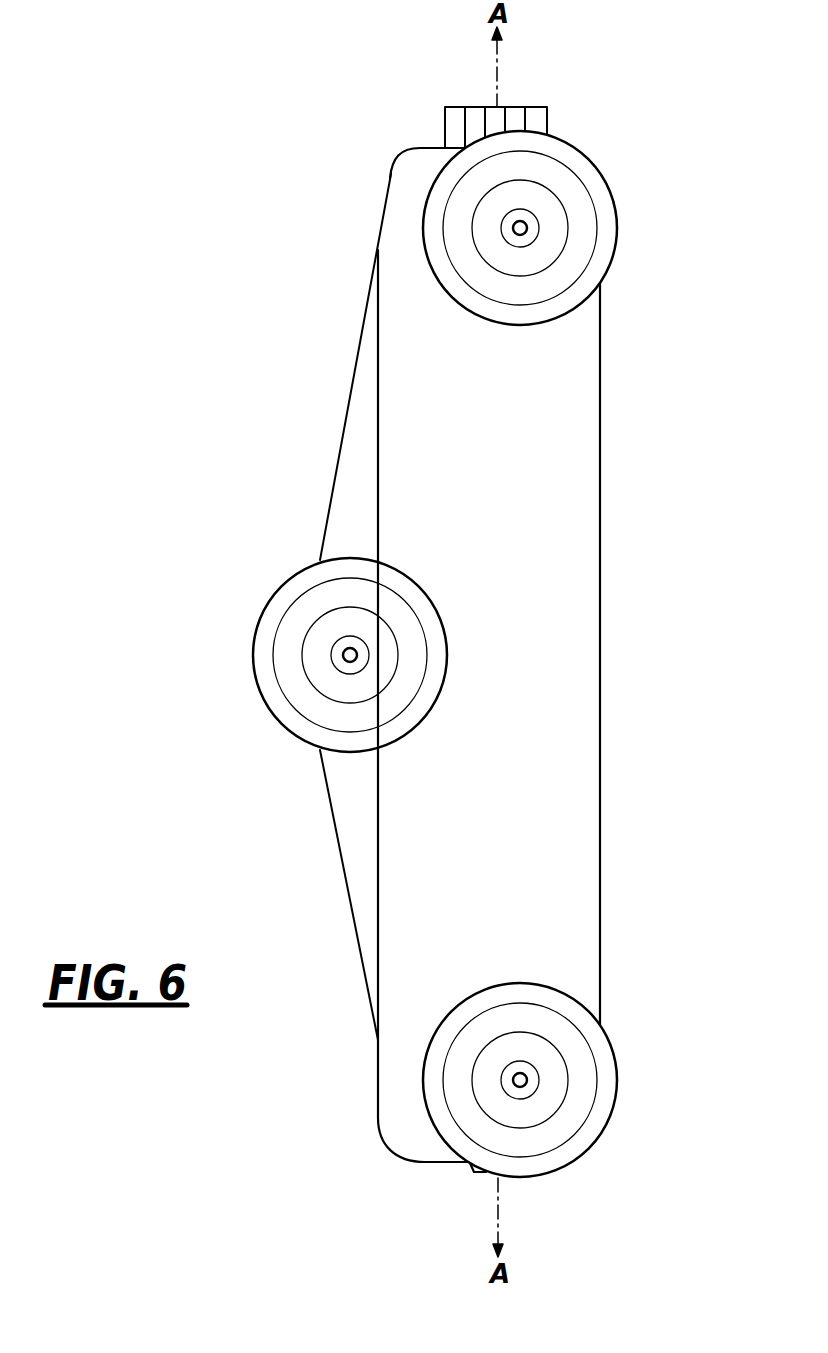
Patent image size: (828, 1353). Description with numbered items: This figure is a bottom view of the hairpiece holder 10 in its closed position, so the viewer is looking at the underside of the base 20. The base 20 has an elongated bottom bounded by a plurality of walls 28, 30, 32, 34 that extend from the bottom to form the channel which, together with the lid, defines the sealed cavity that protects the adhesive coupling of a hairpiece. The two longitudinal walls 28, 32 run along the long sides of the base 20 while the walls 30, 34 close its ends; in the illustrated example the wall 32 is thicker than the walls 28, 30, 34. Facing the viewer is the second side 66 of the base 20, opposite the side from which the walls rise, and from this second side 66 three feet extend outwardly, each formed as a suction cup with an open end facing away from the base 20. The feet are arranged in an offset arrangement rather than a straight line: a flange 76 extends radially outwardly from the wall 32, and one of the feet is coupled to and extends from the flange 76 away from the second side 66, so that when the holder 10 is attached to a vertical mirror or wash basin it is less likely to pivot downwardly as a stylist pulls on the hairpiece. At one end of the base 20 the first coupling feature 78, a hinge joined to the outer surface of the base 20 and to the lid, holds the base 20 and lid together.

The hairpiece holder 10 is at (176, 305).
The base 20 is at (608, 496).
The wall 28 is at (600, 409).
The wall 30 is at (435, 148).
The wall 32 is at (375, 425).
The wall 34 is at (437, 1163).
The second side 66 is at (562, 638).
The flange 76 is at (333, 500).
The first coupling feature 78 is at (540, 107).